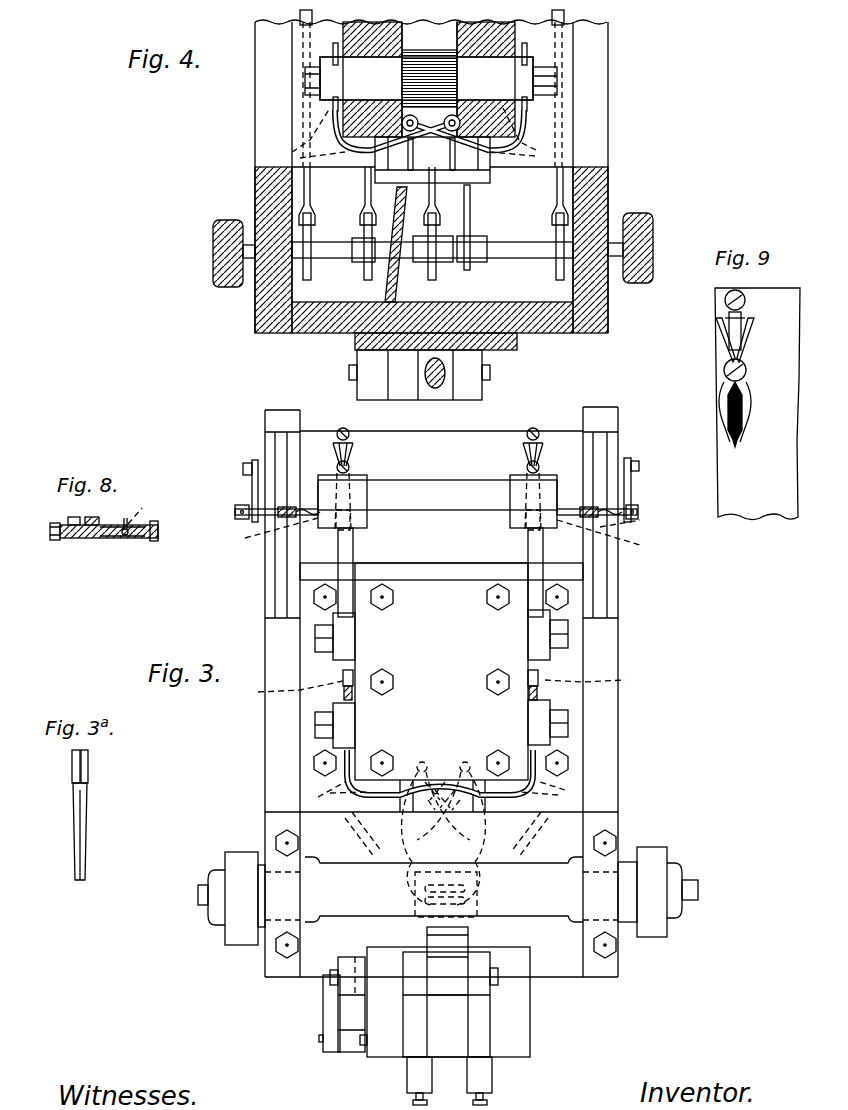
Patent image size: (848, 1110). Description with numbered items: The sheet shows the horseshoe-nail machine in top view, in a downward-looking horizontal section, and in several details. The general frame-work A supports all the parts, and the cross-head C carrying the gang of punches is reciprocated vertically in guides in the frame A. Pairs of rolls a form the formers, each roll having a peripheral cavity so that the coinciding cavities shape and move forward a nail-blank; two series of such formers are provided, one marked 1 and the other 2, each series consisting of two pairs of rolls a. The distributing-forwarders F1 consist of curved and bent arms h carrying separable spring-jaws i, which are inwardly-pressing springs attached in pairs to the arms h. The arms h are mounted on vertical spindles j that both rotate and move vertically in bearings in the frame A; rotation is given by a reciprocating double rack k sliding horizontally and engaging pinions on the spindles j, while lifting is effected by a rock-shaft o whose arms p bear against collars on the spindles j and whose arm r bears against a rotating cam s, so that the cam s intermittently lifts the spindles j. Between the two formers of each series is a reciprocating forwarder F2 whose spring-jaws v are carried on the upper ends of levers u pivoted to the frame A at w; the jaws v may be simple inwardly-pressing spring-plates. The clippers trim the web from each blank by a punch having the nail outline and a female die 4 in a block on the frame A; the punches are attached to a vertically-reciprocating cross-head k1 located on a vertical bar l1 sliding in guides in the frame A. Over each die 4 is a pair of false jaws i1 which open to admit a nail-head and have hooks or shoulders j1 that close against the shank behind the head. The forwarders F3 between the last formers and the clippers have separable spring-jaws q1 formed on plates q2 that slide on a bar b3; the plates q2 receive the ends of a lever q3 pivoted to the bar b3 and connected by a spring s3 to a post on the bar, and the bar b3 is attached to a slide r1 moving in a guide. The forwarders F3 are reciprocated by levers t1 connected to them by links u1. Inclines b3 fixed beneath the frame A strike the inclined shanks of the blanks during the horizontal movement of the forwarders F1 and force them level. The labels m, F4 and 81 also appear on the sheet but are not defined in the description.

In FIG. 4, the frame-work A is at (431, 176).
In FIG. 3, the frame-work A is at (441, 692).
In FIG. 4, the cross-head C is at (429, 78).
In FIG. 3, the cross-head C is at (441, 889).
In FIG. 4, the distributing-forwarder F1 is at (416, 135).
In FIG. 3, the distributing-forwarder F1 is at (441, 792).
In FIG. 3, the reciprocating forwarder F2 is at (442, 686).
In FIG. 3A, the reciprocating forwarder F2 is at (58, 810).
In FIG. 3, the reciprocating forwarder F3 is at (274, 531).
In FIG. 8, the reciprocating forwarder F3 is at (138, 506).
In FIG. 3, the lever F4 is at (601, 536).
In FIG. 4, the curved and bent arm h is at (423, 135).
In FIG. 3, the curved and bent arm h is at (440, 776).
In FIG. 4, the spring-jaws i is at (530, 105).
In FIG. 3, the spring-jaws i is at (335, 751).
In FIG. 3, the false jaws i1 is at (350, 470).
In FIG. 9, the false jaws i1 is at (748, 393).
In FIG. 4, the vertical spindle j is at (431, 123).
In FIG. 3, the vertical spindle j is at (444, 827).
In FIG. 9, the vertical spindle j is at (726, 400).
In FIG. 9, the hooks or shoulders j1 is at (745, 400).
In FIG. 4, the double rack k is at (306, 223).
In FIG. 3, the cross-head k1 is at (437, 501).
In FIG. 4, the vertical bar l1 is at (371, 223).
In FIG. 4, the hub m is at (433, 223).
In FIG. 4, the rock-shaft o is at (432, 161).
In FIG. 4, the arms p is at (436, 154).
In FIG. 3, the spring-jaws q1 is at (540, 528).
In FIG. 8, the spring-jaws q1 is at (151, 538).
In FIG. 8, the plates q2 is at (131, 538).
In FIG. 3, the lever q3 is at (560, 508).
In FIG. 8, the lever q3 is at (124, 518).
In FIG. 4, the arm r is at (465, 227).
In FIG. 3A, the arm r is at (87, 766).
In FIG. 3, the slide r1 is at (436, 504).
In FIG. 8, the slide r1 is at (96, 540).
In FIG. 4, the rotating cam s is at (470, 272).
In FIG. 8, the spring s3 is at (87, 514).
In FIG. 3, the levers t1 is at (252, 482).
In FIG. 3A, the levers u is at (85, 831).
In FIG. 3, the links u1 is at (252, 494).
In FIG. 3A, the spring-jaws v is at (72, 766).
In FIG. 3, the pivot w is at (570, 679).
In FIG. 3, the rolls a is at (336, 660).
In FIG. 3, the bar / incline b3 is at (494, 685).
In FIG. 8, the bar / incline b3 is at (78, 540).
In FIG. 3, the series of formers 1 is at (548, 677).
In FIG. 3, the series of formers 2 is at (335, 680).
In FIG. 9, the female die 4 is at (740, 430).
In FIG. 3, the frame post 81 is at (443, 585).